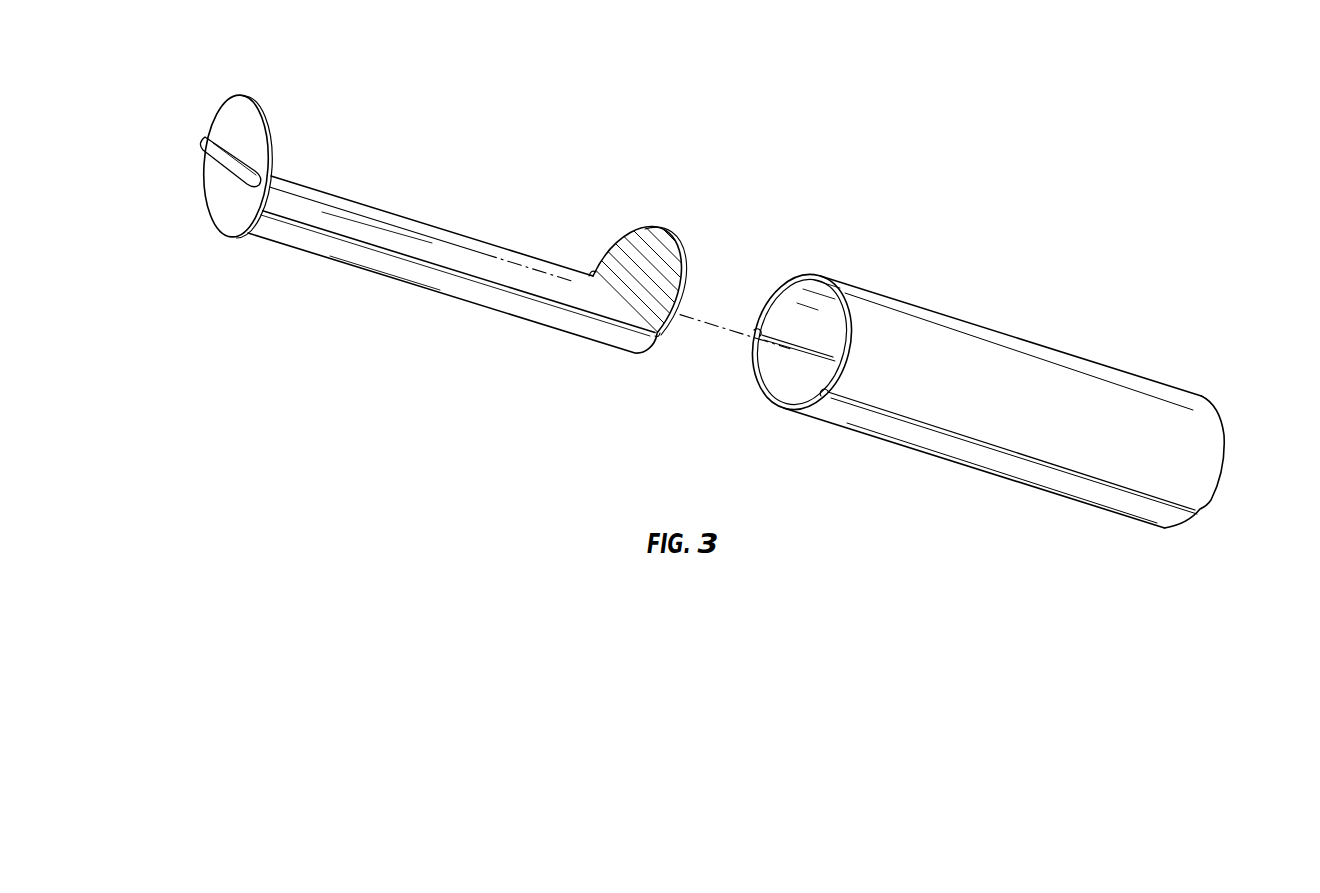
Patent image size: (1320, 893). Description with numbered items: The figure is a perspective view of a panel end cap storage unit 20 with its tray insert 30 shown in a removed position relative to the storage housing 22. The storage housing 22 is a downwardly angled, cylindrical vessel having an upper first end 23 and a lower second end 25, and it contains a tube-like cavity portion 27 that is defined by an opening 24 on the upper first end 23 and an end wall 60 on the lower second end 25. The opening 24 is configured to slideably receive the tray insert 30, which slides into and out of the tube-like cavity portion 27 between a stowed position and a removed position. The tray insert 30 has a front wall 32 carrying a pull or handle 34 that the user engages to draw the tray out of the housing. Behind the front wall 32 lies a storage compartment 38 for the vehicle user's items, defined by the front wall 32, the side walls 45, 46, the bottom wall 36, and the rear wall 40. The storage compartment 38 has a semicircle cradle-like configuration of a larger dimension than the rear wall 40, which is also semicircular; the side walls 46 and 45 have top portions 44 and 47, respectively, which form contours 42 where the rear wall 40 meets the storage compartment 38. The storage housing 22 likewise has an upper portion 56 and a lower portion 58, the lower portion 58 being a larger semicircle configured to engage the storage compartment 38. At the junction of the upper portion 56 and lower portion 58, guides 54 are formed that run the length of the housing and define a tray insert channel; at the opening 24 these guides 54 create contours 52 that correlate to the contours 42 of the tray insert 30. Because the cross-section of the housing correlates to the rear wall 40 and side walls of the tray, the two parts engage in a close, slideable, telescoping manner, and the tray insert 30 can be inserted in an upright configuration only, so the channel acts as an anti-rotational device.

The panel end cap storage unit 20 is at (690, 183).
The storage housing 22 is at (978, 285).
The upper first end 23 is at (858, 352).
The opening 24 is at (825, 273).
The lower second end 25 is at (1213, 452).
The tube-like cavity portion 27 is at (1073, 387).
The tray insert 30 is at (422, 150).
The front wall 32 is at (217, 187).
The pull or handle 34 is at (202, 138).
The bottom wall 36 is at (405, 290).
The storage compartment 38 is at (457, 220).
The rear wall 40 is at (645, 242).
The contours 42 is at (592, 275).
The top portion 44 is at (520, 290).
The side wall 45 is at (317, 250).
The side wall 46 is at (303, 212).
The top portion 47 is at (387, 210).
The contours 52 is at (757, 330).
The guides 54 is at (815, 345).
The upper portion 56 is at (777, 278).
The lower portion 58 is at (740, 367).
The end wall 60 is at (1220, 474).